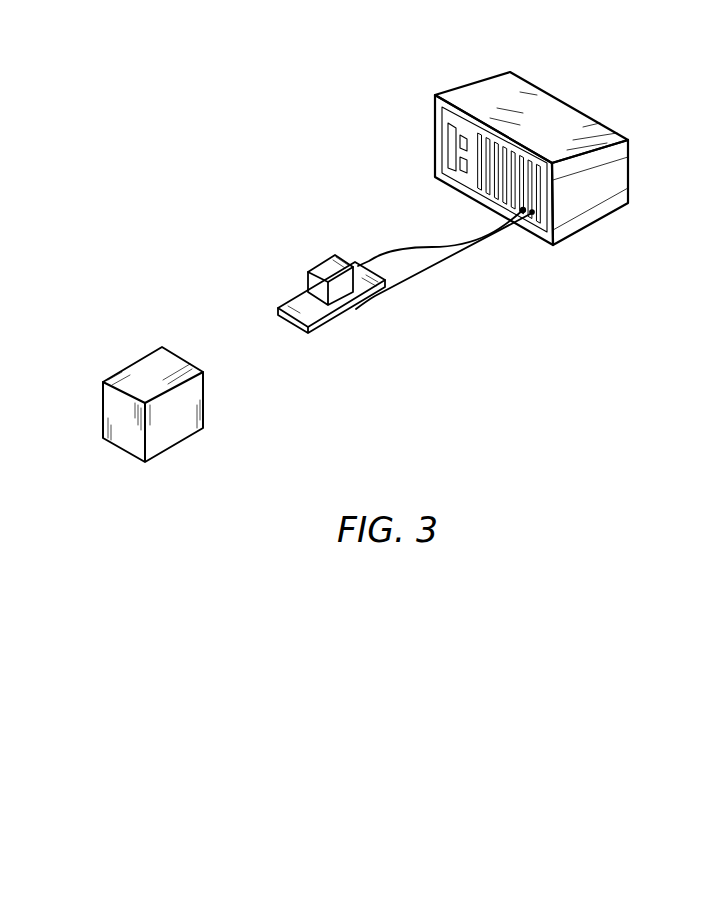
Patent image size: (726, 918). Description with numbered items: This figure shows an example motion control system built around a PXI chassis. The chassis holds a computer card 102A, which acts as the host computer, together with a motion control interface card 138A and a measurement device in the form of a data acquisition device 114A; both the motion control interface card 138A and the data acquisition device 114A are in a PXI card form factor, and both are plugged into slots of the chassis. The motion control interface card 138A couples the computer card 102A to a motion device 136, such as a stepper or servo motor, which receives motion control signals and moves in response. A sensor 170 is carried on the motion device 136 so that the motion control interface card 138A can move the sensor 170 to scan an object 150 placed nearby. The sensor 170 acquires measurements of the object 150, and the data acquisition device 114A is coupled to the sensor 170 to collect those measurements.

The computer card 102A is at (452, 118).
The data acquisition device 114A is at (523, 213).
The motion control interface card 138A is at (533, 213).
The motion device 136 is at (288, 302).
The sensor 170 is at (318, 265).
The object 150 is at (128, 368).